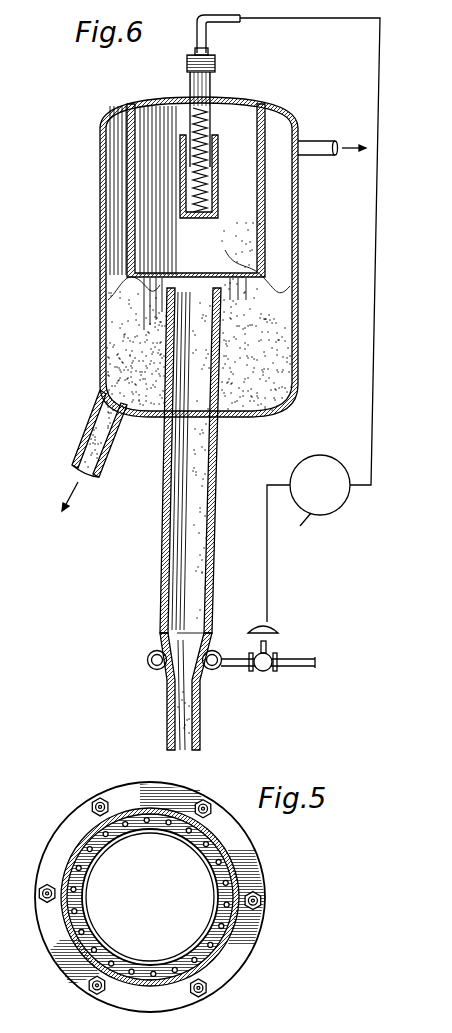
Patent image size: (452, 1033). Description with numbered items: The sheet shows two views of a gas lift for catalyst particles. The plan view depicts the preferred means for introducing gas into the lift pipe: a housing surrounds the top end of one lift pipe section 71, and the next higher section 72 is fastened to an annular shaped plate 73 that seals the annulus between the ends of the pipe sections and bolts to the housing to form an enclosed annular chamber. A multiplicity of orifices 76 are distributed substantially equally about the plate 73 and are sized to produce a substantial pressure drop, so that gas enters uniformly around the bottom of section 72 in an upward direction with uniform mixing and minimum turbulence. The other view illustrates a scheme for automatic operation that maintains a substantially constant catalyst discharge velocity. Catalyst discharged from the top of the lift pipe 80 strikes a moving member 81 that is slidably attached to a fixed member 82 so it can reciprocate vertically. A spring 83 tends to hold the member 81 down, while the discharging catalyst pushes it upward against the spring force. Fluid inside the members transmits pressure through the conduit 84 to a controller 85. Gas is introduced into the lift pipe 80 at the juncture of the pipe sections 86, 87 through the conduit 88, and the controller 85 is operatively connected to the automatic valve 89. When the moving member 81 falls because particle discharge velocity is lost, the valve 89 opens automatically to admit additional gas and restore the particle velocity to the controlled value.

In FIG. 5, the lift pipe section 71 is at (208, 925).
In FIG. 5, the next higher pipe section 72 is at (233, 930).
In FIG. 5, the annular shaped plate 73 is at (99, 950).
In FIG. 5, the orifices 76 is at (82, 912).
In FIG. 6, the lift pipe 80 is at (224, 444).
In FIG. 6, the moving member 81 is at (220, 140).
In FIG. 6, the fixed member 82 is at (212, 80).
In FIG. 6, the spring 83 is at (200, 178).
In FIG. 6, the conduit 84 is at (207, 36).
In FIG. 6, the controller 85 is at (337, 440).
In FIG. 6, the pipe section 86 is at (160, 560).
In FIG. 6, the pipe section 87 is at (200, 726).
In FIG. 6, the conduit 88 is at (299, 668).
In FIG. 6, the automatic valve 89 is at (272, 645).